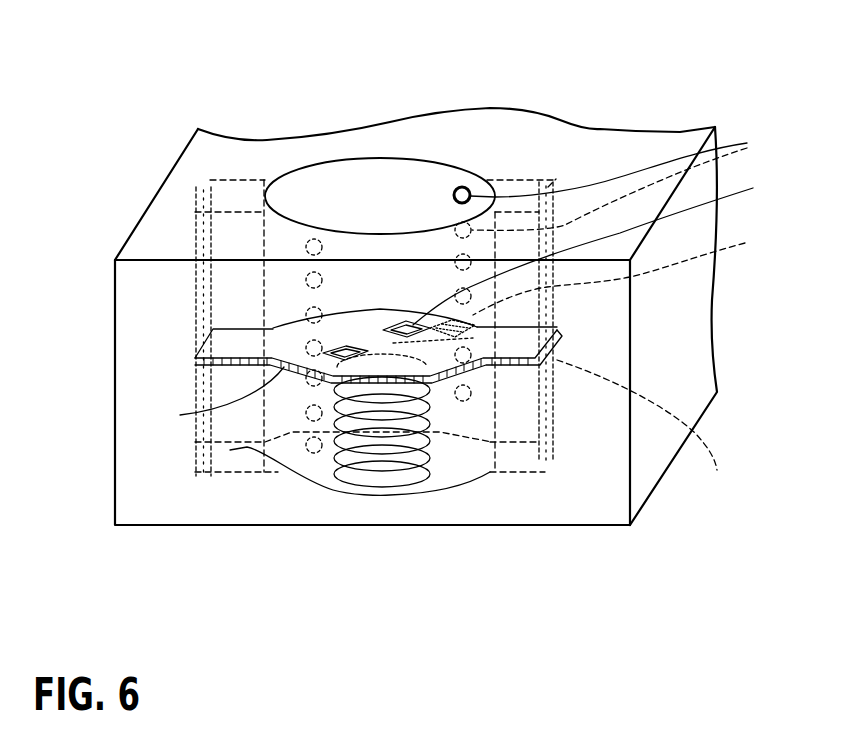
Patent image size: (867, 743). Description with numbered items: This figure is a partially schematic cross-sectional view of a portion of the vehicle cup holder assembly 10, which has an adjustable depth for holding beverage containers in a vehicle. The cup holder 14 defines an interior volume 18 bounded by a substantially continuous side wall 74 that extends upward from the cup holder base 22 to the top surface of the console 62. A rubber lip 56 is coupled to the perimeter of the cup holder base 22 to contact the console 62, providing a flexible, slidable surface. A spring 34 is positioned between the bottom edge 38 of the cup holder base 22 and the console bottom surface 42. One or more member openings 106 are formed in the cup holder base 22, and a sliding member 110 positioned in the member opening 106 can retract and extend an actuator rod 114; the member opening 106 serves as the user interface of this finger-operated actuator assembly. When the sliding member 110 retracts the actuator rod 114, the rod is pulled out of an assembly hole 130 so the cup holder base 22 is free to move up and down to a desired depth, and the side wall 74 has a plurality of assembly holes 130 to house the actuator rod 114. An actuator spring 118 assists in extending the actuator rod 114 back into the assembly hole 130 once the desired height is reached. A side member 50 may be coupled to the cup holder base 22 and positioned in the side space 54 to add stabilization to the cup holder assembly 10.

The vehicle cup holder assembly 10 is at (250, 108).
The cup holder 14 is at (363, 157).
The interior volume 18 is at (398, 204).
The cup holder base 22 is at (296, 341).
The spring 34 is at (427, 455).
The bottom edge 38 is at (180, 415).
The console bottom surface 42 is at (230, 450).
The side member 50 is at (517, 338).
The side space 54 is at (507, 422).
The rubber lip 56 is at (442, 378).
The console 62 is at (603, 150).
The side wall 74 is at (280, 195).
The member opening 106 is at (402, 323).
The sliding member 110 is at (605, 249).
The actuator rod 114 is at (606, 281).
The actuator spring 118 is at (649, 430).
The assembly hole 130 is at (632, 181).